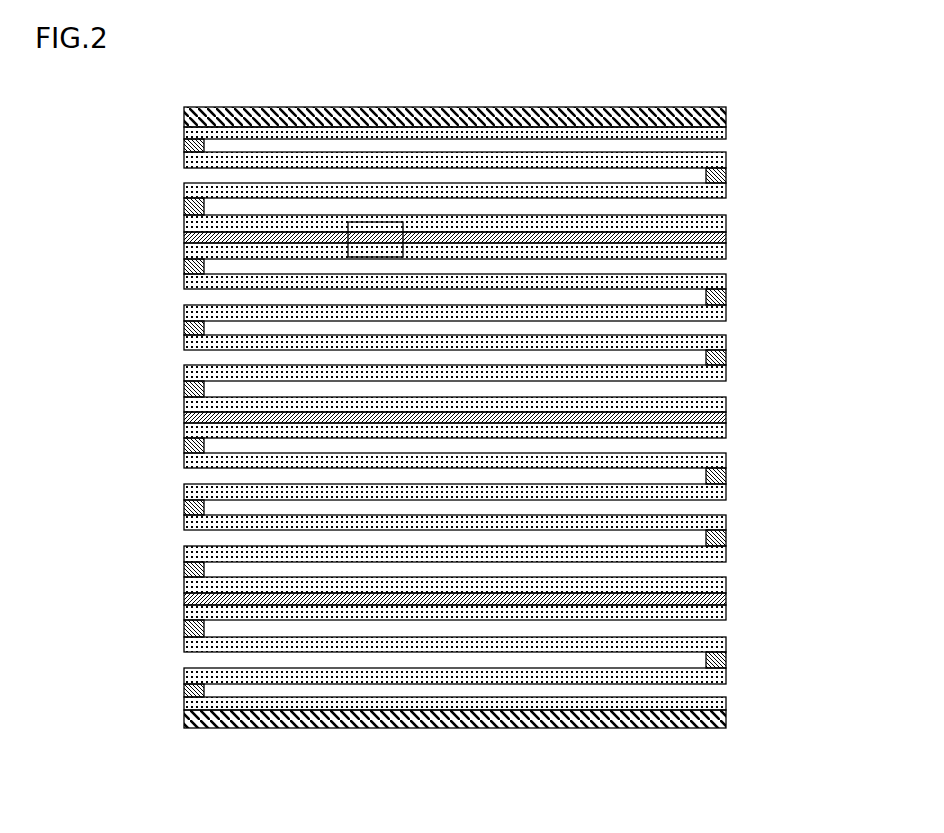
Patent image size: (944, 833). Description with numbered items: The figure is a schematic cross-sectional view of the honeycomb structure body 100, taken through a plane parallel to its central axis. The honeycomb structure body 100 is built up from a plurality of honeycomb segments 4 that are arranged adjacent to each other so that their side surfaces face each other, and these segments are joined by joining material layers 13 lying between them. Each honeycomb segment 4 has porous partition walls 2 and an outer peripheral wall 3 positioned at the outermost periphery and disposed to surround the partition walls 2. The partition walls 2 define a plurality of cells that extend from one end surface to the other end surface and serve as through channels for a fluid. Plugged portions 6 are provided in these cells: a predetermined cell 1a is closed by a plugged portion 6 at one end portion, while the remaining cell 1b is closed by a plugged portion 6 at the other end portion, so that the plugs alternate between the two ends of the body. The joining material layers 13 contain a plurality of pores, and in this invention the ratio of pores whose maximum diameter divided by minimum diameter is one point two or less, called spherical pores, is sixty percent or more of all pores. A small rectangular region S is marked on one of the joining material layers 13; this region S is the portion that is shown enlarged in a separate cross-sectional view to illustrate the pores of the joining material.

The honeycomb structure body 100 is at (660, 88).
The outer peripheral wall 3 is at (523, 107).
The predetermined cell 1a is at (702, 143).
The remaining cell 1b is at (688, 175).
The partition wall 2 is at (702, 193).
The plugged portion 6 is at (727, 300).
The joining material layer 13 is at (727, 238).
The honeycomb segment 4 is at (166, 190).
The region S is at (372, 222).